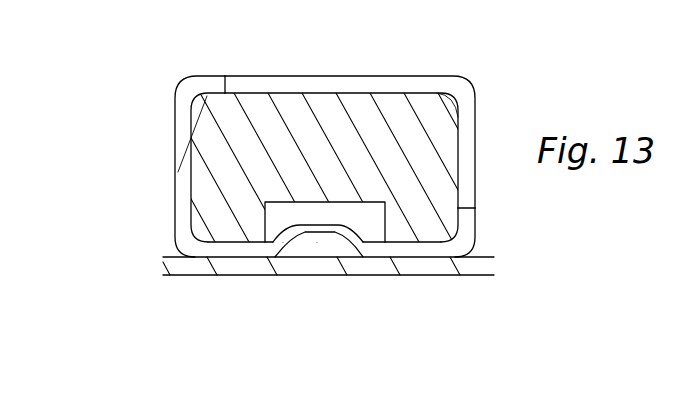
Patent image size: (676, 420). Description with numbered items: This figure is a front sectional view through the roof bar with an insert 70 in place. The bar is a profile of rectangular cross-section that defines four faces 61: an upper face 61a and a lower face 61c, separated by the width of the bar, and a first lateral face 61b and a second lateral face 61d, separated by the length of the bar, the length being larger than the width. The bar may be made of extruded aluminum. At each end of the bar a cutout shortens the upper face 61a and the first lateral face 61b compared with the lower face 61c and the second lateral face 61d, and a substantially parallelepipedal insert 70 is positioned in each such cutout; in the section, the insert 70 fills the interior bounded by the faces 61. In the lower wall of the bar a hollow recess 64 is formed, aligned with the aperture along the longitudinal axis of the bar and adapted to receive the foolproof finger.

The faces 61 is at (325, 175).
The upper face 61a is at (211, 76).
The first lateral face 61b is at (478, 219).
The lower face 61c is at (208, 250).
The second lateral face 61d is at (175, 126).
The hollow recess 64 is at (320, 232).
The insert 70 is at (220, 163).